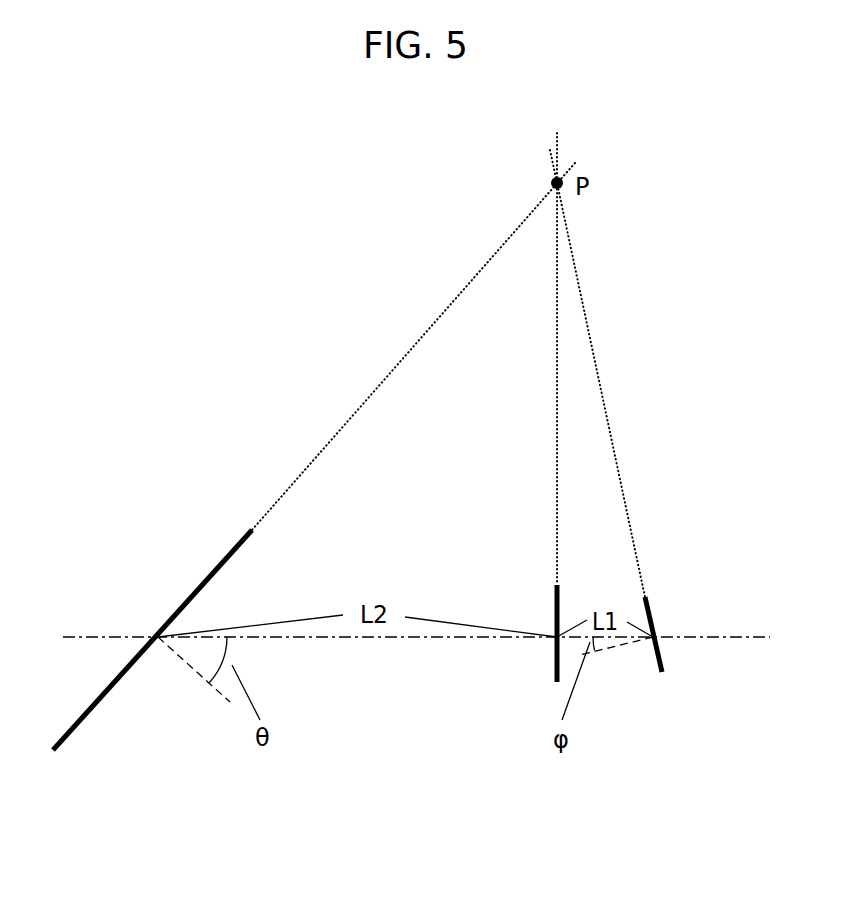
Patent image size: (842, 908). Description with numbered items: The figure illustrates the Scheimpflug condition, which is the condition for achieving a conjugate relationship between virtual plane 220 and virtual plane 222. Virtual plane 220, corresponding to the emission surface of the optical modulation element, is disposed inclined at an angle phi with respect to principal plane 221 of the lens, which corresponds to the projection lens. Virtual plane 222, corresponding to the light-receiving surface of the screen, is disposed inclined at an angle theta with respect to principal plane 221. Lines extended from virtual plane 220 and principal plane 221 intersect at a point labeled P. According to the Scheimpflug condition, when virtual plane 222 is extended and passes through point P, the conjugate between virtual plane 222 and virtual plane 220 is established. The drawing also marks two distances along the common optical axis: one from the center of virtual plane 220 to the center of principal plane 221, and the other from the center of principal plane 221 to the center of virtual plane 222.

The virtual plane 220 is at (653, 615).
The principal plane of the lens 221 is at (555, 617).
The virtual plane 222 is at (175, 615).